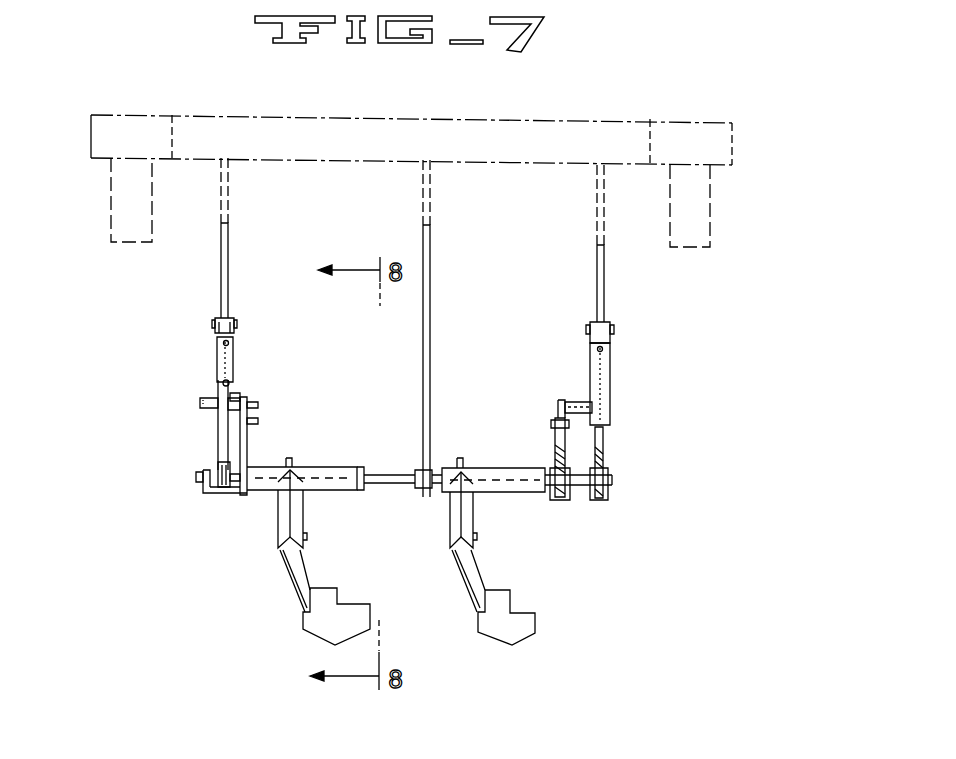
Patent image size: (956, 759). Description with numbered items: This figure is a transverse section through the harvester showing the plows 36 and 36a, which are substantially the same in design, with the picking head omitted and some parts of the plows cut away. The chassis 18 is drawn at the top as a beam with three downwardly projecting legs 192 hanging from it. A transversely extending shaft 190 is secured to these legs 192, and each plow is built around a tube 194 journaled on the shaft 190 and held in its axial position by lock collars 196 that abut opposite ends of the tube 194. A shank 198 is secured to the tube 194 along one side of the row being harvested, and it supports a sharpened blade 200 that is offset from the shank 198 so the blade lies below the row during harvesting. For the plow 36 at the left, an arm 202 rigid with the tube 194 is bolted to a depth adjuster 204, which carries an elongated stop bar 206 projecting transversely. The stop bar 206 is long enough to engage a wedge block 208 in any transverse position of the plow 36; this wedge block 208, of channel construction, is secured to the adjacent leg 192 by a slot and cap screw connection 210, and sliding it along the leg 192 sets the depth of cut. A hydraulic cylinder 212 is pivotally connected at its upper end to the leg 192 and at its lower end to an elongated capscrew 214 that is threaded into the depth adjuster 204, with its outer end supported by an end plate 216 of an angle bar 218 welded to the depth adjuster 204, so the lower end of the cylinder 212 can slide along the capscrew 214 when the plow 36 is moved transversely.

The chassis 18 is at (105, 176).
The legs 192 is at (221, 252).
The hydraulic cylinder 212 is at (217, 357).
The wedge block 208 is at (220, 384).
The slot and cap screw connection 210 is at (238, 398).
The stop bar 206 is at (200, 405).
The depth adjuster 204 is at (247, 406).
The arm 202 is at (248, 440).
The capscrew 214 is at (218, 468).
The end plate 216 is at (200, 478).
The angle bar 218 is at (220, 489).
The tube 194 is at (300, 467).
The lock collars 196 is at (361, 468).
The shaft 190 is at (596, 478).
The shank 198 is at (303, 519).
The blade 200 is at (310, 621).
The plow 36 is at (274, 557).
The plow 36a is at (500, 558).